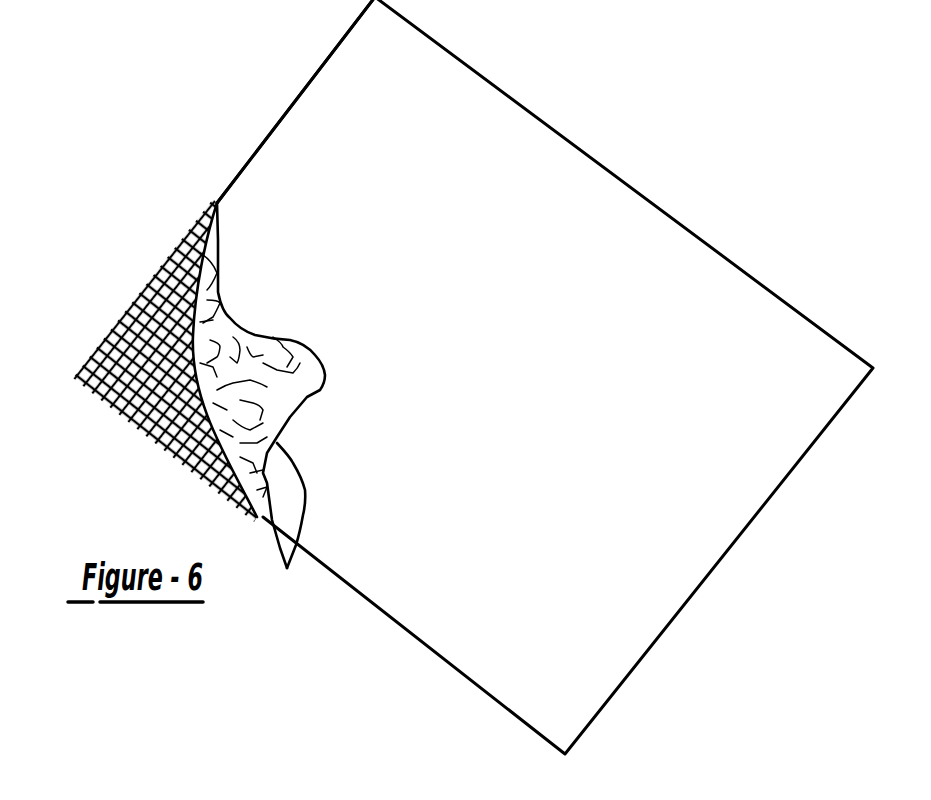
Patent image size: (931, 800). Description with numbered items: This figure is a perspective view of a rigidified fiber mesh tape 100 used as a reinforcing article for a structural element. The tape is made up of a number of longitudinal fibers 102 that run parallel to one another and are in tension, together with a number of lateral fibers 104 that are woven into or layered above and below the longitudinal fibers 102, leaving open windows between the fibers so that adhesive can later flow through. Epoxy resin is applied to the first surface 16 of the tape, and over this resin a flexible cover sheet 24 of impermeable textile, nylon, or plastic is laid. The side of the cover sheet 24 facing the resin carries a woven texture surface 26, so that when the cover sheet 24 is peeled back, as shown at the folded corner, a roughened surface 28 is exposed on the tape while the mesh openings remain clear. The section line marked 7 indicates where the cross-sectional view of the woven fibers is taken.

The rigidified fiber mesh tape 100 is at (170, 79).
The cover sheet 24 is at (253, 207).
The first surface 16 is at (199, 356).
The roughened surface 28 is at (147, 300).
The woven texture surface 26 is at (287, 568).
The longitudinal fibers 102 is at (83, 377).
The lateral fibers 104 is at (120, 407).
The section line 7- 7 is at (422, 585).